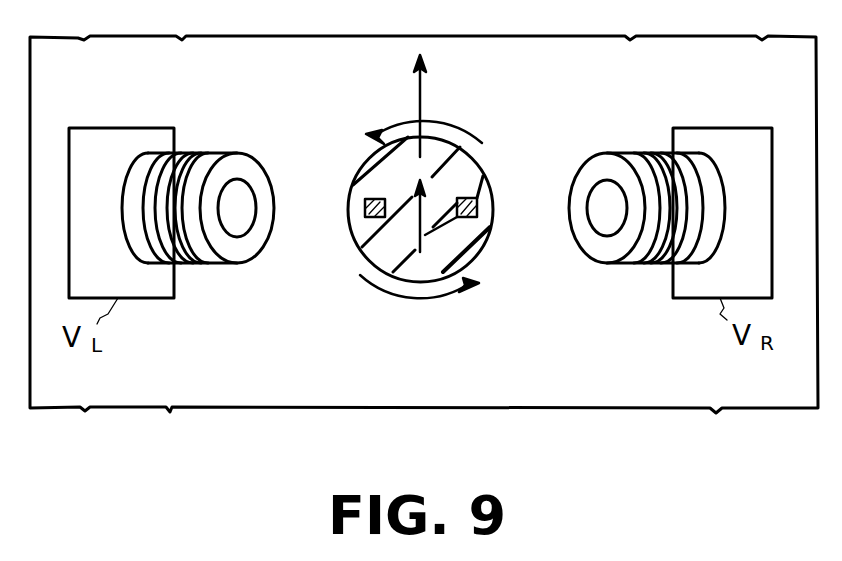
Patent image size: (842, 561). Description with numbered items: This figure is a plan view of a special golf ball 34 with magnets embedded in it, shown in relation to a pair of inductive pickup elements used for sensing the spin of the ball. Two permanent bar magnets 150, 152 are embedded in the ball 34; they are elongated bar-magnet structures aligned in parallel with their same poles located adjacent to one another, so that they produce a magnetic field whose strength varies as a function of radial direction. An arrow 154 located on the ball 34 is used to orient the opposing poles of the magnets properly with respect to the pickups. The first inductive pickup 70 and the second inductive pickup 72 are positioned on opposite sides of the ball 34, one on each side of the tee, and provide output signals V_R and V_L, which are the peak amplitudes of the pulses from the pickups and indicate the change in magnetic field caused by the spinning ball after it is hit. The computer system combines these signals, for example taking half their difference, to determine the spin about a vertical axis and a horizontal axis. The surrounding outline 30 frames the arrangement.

The display/sheet frame 30 is at (681, 390).
The ball 34 is at (470, 162).
The first inductive pickup 70 is at (607, 153).
The second inductive pickup 72 is at (231, 153).
The permanent bar magnet 150 is at (368, 200).
The permanent bar magnet 152 is at (477, 198).
The arrow 154 is at (428, 232).